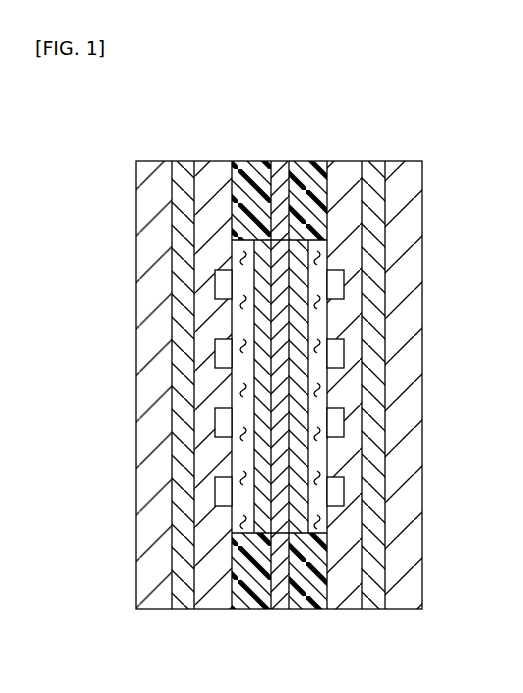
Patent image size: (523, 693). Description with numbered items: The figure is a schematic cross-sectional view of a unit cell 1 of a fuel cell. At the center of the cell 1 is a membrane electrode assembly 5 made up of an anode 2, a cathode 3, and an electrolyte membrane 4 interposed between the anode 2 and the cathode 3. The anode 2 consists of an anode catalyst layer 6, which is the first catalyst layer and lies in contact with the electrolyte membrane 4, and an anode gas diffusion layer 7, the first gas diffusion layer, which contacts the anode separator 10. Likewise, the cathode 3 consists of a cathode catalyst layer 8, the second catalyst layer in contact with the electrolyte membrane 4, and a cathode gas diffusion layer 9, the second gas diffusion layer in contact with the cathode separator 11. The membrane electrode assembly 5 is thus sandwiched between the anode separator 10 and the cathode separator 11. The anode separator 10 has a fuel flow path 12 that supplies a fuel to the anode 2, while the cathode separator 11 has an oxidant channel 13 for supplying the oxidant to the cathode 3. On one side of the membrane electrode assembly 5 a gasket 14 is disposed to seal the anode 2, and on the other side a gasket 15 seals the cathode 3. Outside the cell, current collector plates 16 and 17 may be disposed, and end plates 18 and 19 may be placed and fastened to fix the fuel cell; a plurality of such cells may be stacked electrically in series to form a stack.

The cell 1 is at (440, 122).
The anode 2 is at (297, 121).
The cathode 3 is at (260, 121).
The electrolyte membrane 4 is at (282, 161).
The membrane electrode assembly 5 is at (230, 101).
The anode catalyst layer 6 is at (304, 245).
The anode gas diffusion layer 7 is at (324, 245).
The cathode catalyst layer 8 is at (254, 245).
The cathode gas diffusion layer 9 is at (235, 245).
The anode separator 10 is at (348, 243).
The cathode separator 11 is at (209, 247).
The fuel flow path 12 is at (342, 488).
The oxidant channel 13 is at (215, 490).
The gasket 14 is at (312, 600).
The gasket 15 is at (256, 600).
The current collector plate 16 is at (378, 318).
The current collector plate 17 is at (172, 320).
The end plate 18 is at (403, 360).
The end plate 19 is at (150, 362).